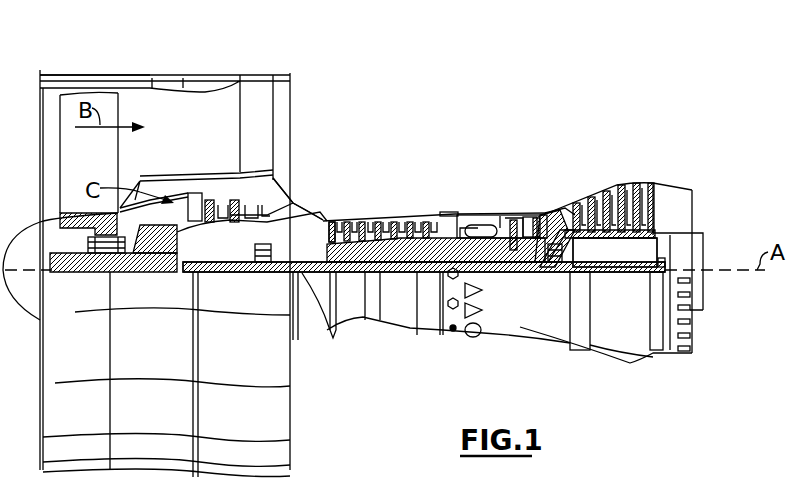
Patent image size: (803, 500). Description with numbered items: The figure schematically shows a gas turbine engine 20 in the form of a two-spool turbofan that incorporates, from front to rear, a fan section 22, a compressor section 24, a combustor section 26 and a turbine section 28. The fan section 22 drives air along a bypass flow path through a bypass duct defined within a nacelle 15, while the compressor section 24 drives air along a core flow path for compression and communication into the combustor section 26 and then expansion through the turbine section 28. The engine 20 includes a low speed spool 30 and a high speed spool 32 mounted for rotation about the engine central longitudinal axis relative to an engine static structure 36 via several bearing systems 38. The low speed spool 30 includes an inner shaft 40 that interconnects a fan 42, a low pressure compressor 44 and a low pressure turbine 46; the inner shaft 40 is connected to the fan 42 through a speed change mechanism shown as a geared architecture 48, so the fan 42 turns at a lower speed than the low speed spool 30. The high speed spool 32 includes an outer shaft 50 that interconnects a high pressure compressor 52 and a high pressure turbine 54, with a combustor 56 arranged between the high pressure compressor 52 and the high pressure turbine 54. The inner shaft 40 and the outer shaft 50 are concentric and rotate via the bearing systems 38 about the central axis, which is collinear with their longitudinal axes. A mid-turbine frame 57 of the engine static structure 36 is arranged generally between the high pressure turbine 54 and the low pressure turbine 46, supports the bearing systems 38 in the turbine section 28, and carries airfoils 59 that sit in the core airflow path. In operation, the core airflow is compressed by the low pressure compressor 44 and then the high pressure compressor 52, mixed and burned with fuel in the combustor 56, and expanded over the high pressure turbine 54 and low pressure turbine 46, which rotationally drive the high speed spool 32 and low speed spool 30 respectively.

The nacelle 15 is at (167, 75).
The gas turbine engine 20 is at (492, 101).
The fan section 22 is at (115, 66).
The compressor section 24 is at (330, 207).
The combustor section 26 is at (481, 192).
The turbine section 28 is at (586, 167).
The low speed spool 30 is at (402, 283).
The high speed spool 32 is at (428, 227).
The engine static structure 36 is at (430, 344).
The bearing systems 38 is at (263, 272).
The inner shaft 40 is at (305, 275).
The fan 42 is at (105, 166).
The low pressure compressor 44 is at (242, 217).
The low pressure turbine 46 is at (610, 182).
The geared architecture 48 is at (167, 267).
The outer shaft 50 is at (492, 272).
The high pressure compressor 52 is at (390, 227).
The high pressure turbine 54 is at (568, 228).
The combustor 56 is at (482, 232).
The mid-turbine frame 57 is at (566, 201).
The airfoils 59 is at (576, 243).